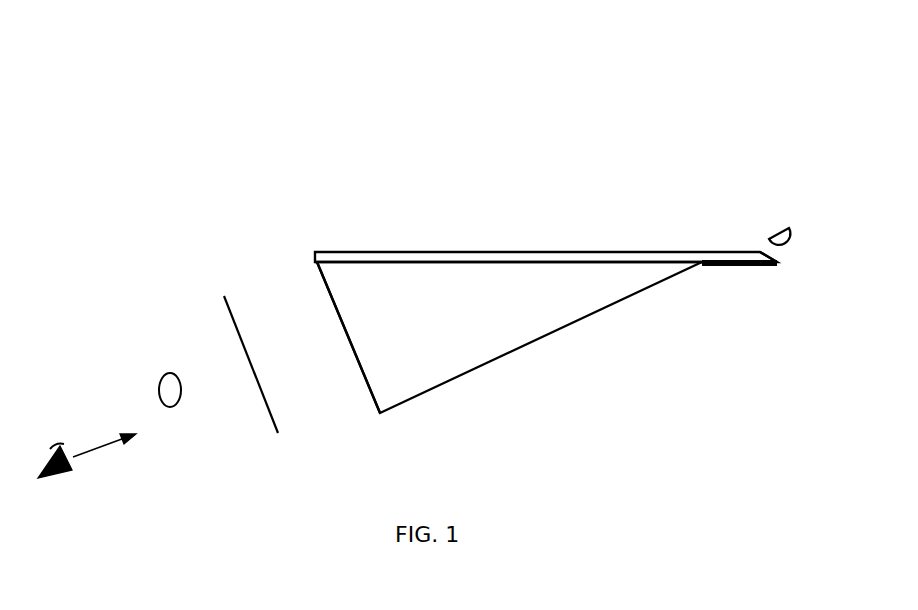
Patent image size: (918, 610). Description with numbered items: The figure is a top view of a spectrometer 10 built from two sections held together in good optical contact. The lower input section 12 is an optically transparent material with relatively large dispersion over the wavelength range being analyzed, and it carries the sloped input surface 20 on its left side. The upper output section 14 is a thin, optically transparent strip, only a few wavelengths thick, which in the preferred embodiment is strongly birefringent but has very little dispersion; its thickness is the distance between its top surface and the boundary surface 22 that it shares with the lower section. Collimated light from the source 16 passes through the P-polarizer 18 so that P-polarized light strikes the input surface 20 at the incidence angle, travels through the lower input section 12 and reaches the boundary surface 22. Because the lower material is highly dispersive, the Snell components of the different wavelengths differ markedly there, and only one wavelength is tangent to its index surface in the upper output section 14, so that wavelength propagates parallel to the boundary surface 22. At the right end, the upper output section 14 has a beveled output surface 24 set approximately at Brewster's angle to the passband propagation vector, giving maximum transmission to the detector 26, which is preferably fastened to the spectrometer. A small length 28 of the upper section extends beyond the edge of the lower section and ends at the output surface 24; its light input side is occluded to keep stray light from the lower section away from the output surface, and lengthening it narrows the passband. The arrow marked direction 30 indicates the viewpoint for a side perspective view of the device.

The spectrometer 10 is at (524, 83).
The lower input section 12 is at (434, 330).
The upper output section 14 is at (606, 253).
The source 16 is at (170, 408).
The P-polarizer 18 is at (222, 264).
The input surface 20 is at (358, 360).
The boundary surface 22 is at (567, 263).
The output surface 24 is at (769, 252).
The detector 26 is at (781, 234).
The small length 28 is at (750, 292).
The direction 30 is at (96, 450).